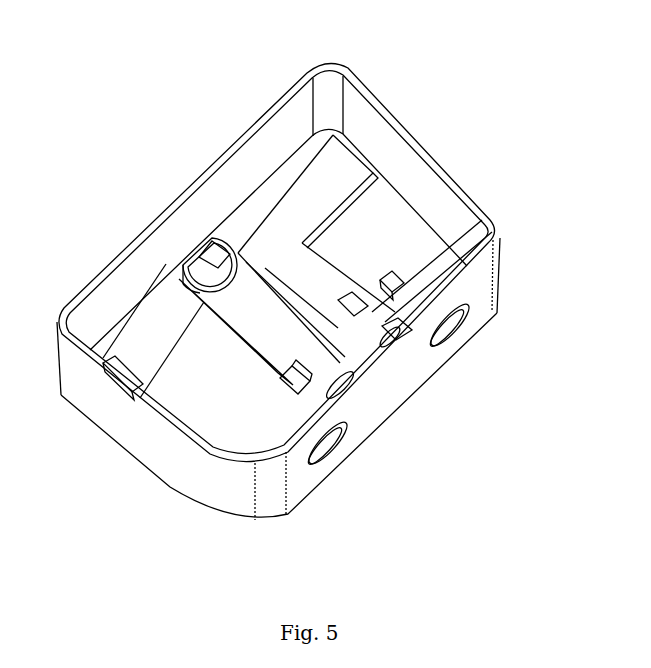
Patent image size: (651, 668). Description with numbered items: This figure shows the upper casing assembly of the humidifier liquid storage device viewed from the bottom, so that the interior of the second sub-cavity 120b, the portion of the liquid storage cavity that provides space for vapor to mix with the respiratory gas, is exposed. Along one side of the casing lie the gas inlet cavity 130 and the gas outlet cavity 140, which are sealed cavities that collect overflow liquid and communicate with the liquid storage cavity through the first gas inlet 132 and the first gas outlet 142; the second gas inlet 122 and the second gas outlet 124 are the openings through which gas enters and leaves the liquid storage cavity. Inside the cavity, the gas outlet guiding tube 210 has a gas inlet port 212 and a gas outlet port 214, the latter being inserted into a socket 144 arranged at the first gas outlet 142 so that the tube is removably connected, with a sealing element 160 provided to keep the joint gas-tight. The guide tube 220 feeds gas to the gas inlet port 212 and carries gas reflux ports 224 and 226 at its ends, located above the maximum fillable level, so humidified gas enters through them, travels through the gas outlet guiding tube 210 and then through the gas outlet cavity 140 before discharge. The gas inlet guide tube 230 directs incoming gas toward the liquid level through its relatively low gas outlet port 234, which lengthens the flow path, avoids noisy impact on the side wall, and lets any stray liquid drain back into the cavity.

The second sub-cavity 120b is at (385, 202).
The second gas inlet 122 is at (340, 438).
The second gas outlet 124 is at (445, 340).
The gas inlet cavity 130 is at (293, 425).
The first gas inlet 132 is at (352, 377).
The gas outlet cavity 140 is at (465, 250).
The first gas outlet 142 is at (397, 331).
The socket 144 is at (388, 278).
The sealing element 160 is at (308, 375).
The gas outlet guiding tube 210 is at (292, 265).
The gas inlet port 212 is at (253, 248).
The gas outlet port 214 is at (352, 308).
The guide tube 220 is at (312, 177).
The gas reflux port 224 is at (118, 375).
The gas reflux port 226 is at (353, 153).
The gas inlet guide tube 230 is at (260, 333).
The gas outlet port 234 is at (202, 262).